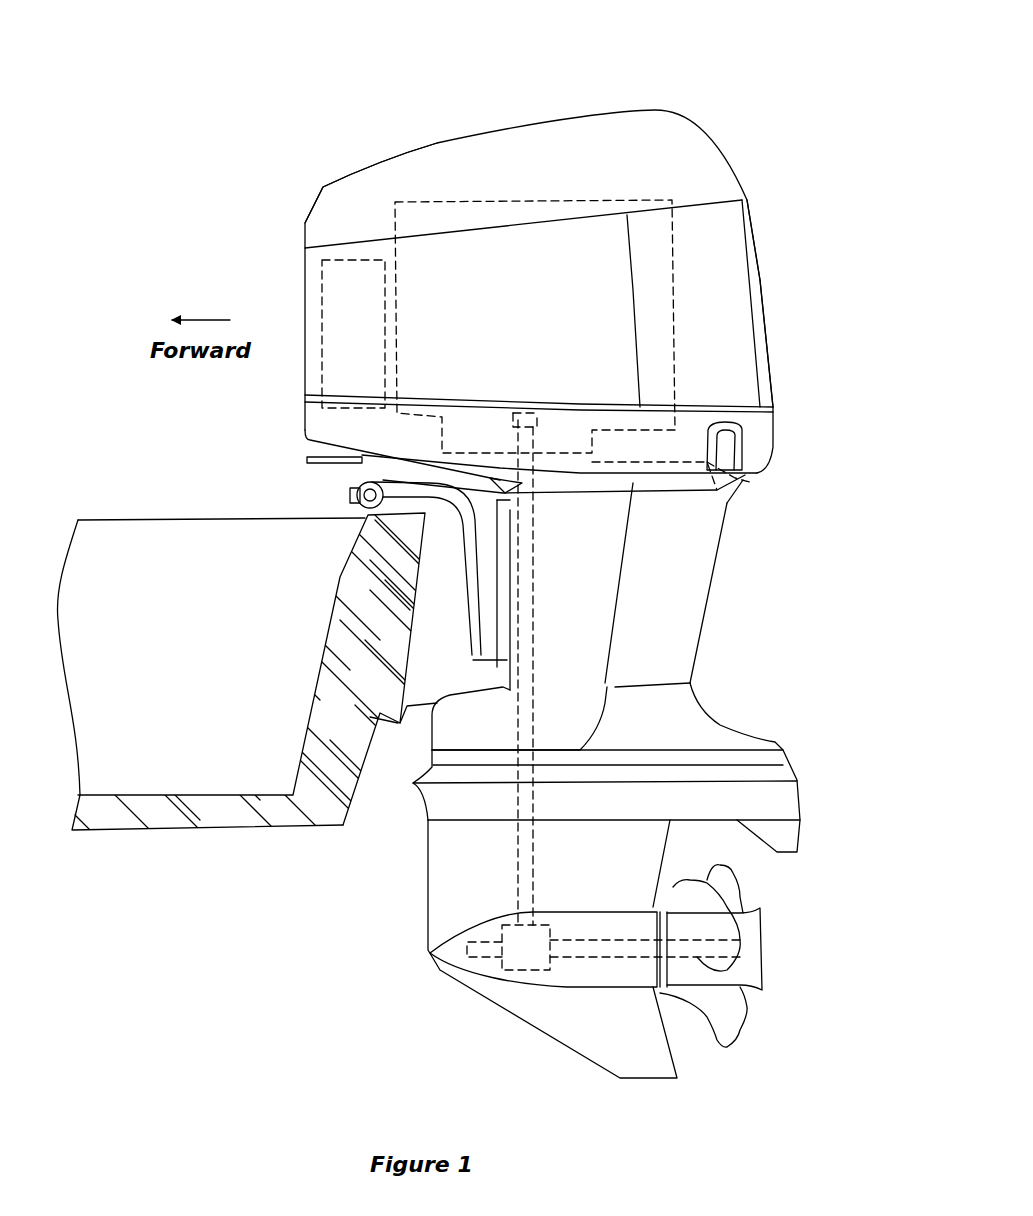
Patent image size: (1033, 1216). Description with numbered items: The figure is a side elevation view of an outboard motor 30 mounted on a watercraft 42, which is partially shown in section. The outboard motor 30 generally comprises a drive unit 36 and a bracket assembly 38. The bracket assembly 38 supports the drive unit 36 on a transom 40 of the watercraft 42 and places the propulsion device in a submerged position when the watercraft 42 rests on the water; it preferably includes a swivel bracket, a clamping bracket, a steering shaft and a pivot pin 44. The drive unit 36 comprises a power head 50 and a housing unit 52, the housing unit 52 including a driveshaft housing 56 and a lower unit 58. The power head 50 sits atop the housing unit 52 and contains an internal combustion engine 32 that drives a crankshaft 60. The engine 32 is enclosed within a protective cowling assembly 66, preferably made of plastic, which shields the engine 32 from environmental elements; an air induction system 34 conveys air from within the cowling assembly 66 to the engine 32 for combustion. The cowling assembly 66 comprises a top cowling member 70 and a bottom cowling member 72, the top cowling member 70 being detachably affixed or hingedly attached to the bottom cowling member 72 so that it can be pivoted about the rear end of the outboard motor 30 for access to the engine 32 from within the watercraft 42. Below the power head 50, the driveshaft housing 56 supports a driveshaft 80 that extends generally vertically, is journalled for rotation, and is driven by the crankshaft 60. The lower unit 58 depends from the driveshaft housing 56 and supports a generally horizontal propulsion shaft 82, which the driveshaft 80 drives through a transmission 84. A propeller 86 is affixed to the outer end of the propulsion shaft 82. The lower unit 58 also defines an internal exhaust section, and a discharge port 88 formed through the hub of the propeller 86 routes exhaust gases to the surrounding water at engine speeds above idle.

The outboard motor 30 is at (708, 44).
The internal combustion engine 32 is at (447, 199).
The air induction system 34 is at (318, 301).
The drive unit 36 is at (800, 387).
The bracket assembly 38 is at (397, 742).
The transom 40 is at (338, 830).
The watercraft 42 is at (106, 492).
The pivot pin 44 is at (355, 484).
The power head 50 is at (764, 228).
The housing unit 52 is at (769, 627).
The driveshaft housing 56 is at (720, 557).
The lower unit 58 is at (427, 922).
The crankshaft 60 is at (540, 428).
The protective cowling assembly 66 is at (334, 179).
The top cowling member 70 is at (767, 310).
The bottom cowling member 72 is at (773, 447).
The driveshaft 80 is at (753, 483).
The propulsion shaft 82 is at (483, 960).
The transmission 84 is at (521, 973).
The propeller 86 is at (748, 1012).
The discharge port 88 is at (783, 946).